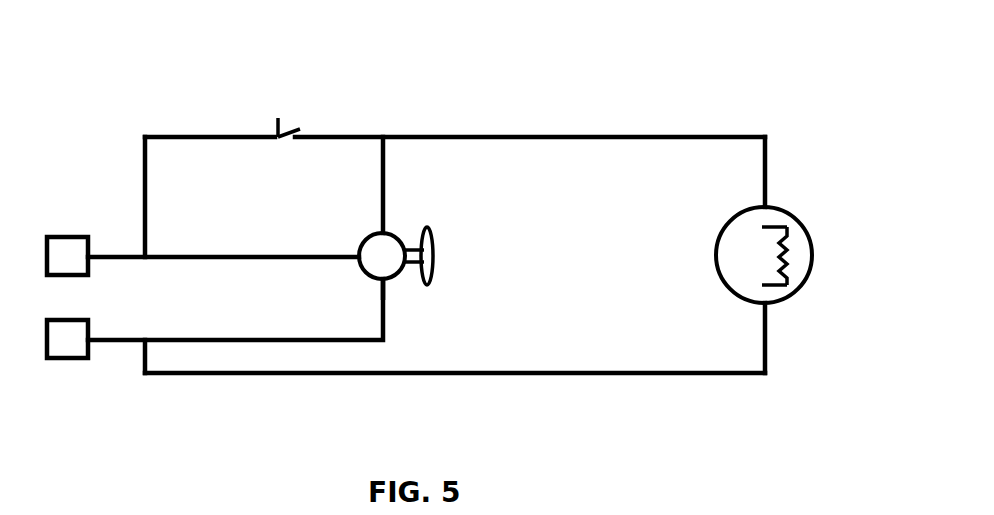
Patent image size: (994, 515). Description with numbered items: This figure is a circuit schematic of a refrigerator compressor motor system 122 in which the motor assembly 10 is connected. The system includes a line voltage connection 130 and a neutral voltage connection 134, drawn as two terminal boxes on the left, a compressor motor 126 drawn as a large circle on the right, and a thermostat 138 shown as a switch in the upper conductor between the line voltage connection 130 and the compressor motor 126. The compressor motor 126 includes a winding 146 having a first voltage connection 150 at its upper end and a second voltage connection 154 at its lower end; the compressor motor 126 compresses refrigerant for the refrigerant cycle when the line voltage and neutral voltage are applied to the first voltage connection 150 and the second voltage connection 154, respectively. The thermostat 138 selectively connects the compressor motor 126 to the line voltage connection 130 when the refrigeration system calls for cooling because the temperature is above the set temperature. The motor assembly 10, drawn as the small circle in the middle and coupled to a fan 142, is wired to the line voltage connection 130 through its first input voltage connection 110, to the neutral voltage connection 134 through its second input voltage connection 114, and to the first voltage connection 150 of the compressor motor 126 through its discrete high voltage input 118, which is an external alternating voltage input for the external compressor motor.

The motor assembly 10 is at (362, 240).
The first input voltage connection 110 is at (360, 268).
The second input voltage connection 114 is at (388, 284).
The discrete high voltage input 118 is at (389, 235).
The refrigerator compressor motor system 122 is at (652, 90).
The compressor motor 126 is at (790, 216).
The line voltage connection 130 is at (55, 234).
The neutral voltage connection 134 is at (62, 360).
The thermostat 138 is at (286, 123).
The fan 142 is at (430, 258).
The winding 146 is at (788, 263).
The first voltage connection 150 is at (763, 225).
The second voltage connection 154 is at (763, 284).